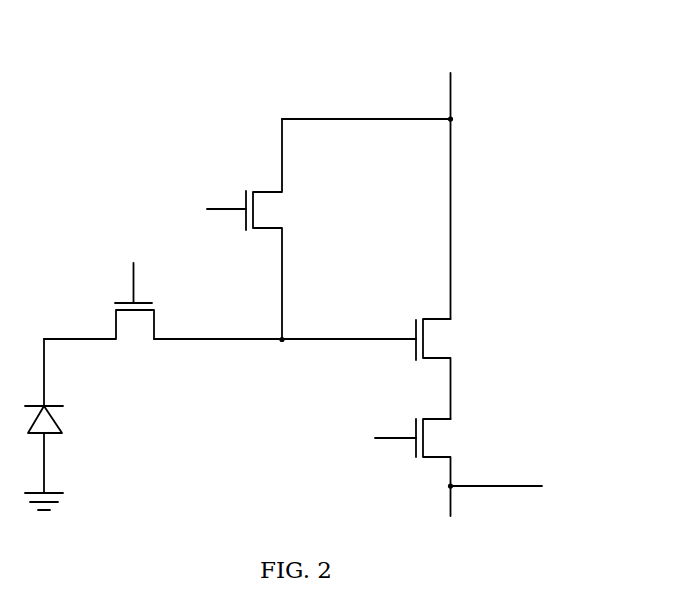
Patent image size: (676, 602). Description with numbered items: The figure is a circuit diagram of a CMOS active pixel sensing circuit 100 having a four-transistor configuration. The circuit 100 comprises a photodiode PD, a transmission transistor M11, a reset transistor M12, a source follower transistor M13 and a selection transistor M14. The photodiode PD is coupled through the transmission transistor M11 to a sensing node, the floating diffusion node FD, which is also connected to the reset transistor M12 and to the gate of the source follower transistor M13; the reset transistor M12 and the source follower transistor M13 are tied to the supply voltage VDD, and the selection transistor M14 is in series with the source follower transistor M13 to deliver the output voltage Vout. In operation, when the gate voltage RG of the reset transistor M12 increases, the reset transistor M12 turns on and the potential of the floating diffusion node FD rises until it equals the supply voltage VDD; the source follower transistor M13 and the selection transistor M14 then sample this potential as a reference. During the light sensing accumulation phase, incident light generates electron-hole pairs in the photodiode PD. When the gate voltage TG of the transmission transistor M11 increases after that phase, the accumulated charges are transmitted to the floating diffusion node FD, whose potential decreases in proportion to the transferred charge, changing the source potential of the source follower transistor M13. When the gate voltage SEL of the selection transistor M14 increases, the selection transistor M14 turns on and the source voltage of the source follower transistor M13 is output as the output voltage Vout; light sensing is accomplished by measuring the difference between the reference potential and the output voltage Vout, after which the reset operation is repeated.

The CMOS active pixel sensing circuit 100 is at (292, 40).
The transmission transistor M11 is at (114, 326).
The reset transistor M12 is at (270, 191).
The source follower transistor M13 is at (432, 317).
The selection transistor M14 is at (432, 417).
The photodiode PD is at (57, 418).
The floating diffusion node FD is at (282, 342).
The gate voltage of the transmission transistor TG is at (133, 272).
The gate voltage of the reset transistor RG is at (214, 211).
The gate voltage of the selection transistor SEL is at (376, 438).
The supply voltage VDD is at (449, 88).
The output voltage Vout is at (519, 486).